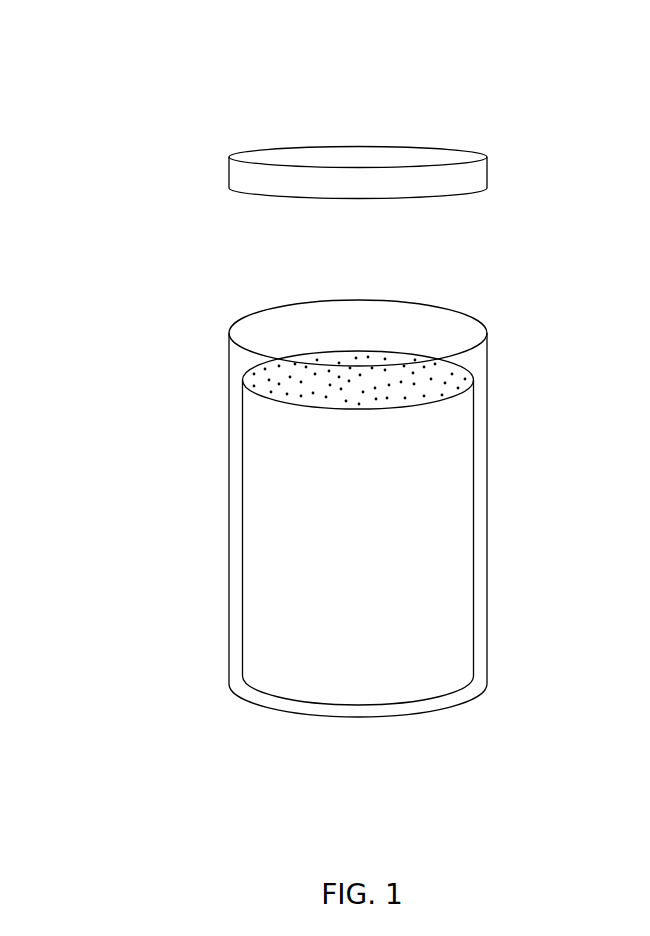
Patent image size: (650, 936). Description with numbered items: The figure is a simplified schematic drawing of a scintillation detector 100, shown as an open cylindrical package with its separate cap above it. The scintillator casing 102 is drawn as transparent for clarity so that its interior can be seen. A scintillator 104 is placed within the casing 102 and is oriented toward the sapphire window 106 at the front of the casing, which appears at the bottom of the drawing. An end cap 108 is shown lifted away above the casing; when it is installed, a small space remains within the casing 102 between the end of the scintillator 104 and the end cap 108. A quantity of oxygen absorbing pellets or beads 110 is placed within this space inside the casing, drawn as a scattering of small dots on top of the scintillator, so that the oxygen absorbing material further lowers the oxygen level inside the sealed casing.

The scintillation detector 100 is at (118, 46).
The scintillator casing 102 is at (488, 618).
The scintillator 104 is at (457, 497).
The sapphire window 106 is at (357, 717).
The end cap 108 is at (488, 181).
The contents / material 110 is at (456, 379).